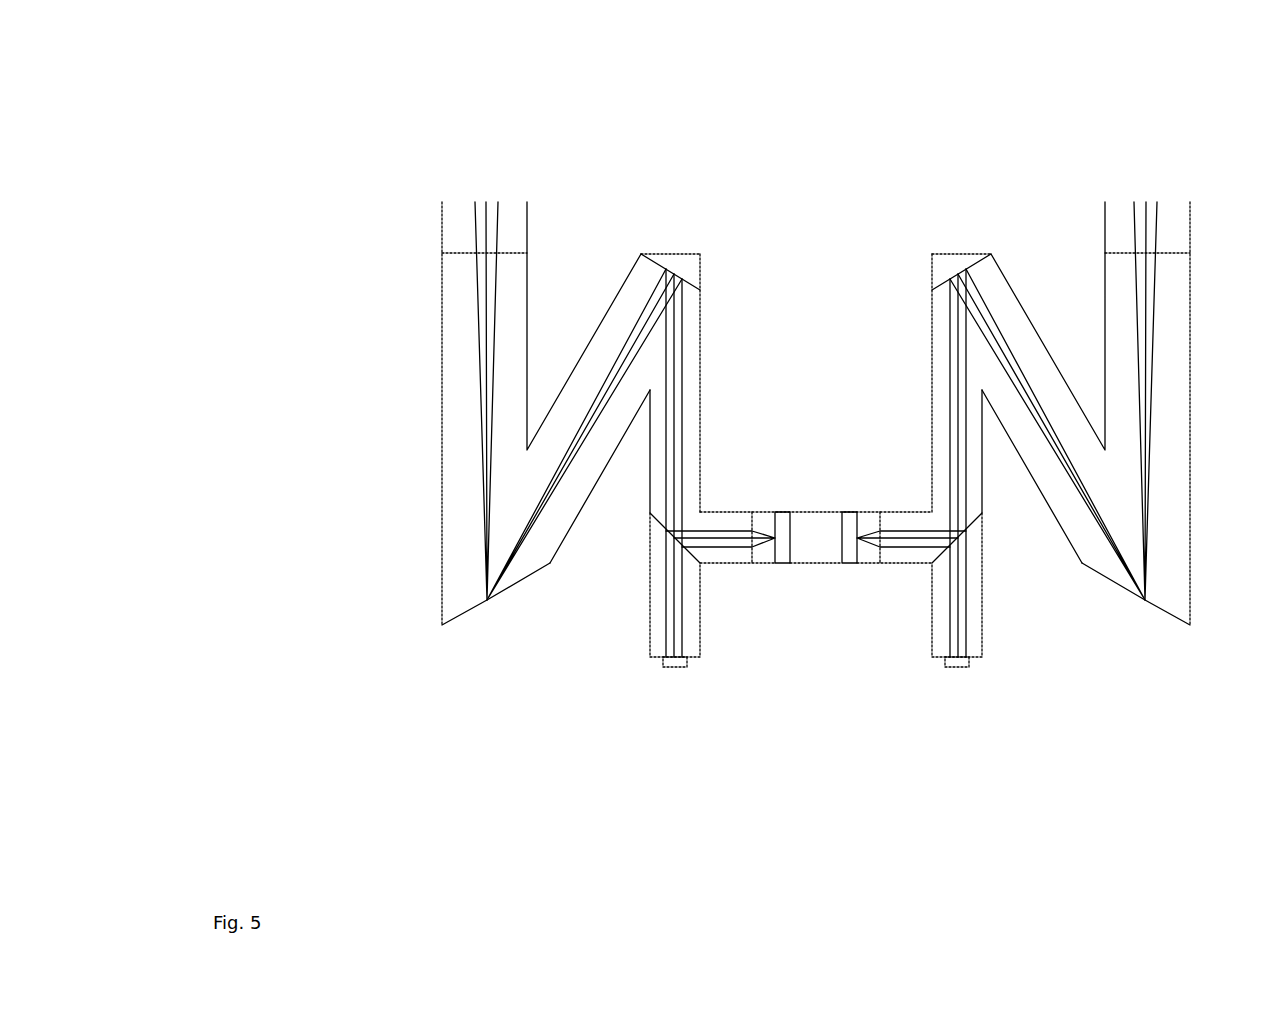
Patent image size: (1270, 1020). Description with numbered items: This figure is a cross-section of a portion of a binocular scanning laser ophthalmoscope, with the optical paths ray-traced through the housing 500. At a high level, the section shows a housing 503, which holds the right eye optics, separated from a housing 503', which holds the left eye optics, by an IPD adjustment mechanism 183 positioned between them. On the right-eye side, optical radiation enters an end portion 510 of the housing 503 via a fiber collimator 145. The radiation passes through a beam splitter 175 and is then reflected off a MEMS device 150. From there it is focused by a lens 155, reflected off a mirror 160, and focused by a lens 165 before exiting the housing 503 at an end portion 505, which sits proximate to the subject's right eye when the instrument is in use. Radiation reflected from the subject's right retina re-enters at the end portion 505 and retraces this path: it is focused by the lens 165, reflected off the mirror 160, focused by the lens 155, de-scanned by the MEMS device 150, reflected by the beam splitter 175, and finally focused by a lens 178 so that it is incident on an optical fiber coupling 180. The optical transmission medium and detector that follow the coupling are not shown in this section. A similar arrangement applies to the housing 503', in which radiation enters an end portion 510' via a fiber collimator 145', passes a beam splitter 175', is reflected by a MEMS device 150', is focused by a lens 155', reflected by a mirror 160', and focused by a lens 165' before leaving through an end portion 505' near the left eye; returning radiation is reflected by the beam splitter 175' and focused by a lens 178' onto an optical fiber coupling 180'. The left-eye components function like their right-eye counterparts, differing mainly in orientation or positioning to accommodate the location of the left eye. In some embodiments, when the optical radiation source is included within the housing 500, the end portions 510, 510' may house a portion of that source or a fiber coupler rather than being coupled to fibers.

The housing 500 is at (246, 58).
The housing 503 is at (410, 413).
The housing 503' is at (1225, 413).
The end portion 505 is at (466, 374).
The end portion 505' is at (1162, 374).
The end portion 510 is at (697, 492).
The end portion 510' is at (940, 492).
The fiber collimator 145 is at (662, 680).
The fiber collimator 145' is at (974, 680).
The MEMS device 150 is at (691, 271).
The MEMS device 150' is at (937, 271).
The lens 155 is at (588, 382).
The lens 155' is at (1043, 382).
The mirror 160 is at (496, 597).
The mirror 160' is at (1136, 597).
The lens 165 is at (451, 251).
The lens 165' is at (1183, 251).
The beam splitter 175 is at (647, 476).
The beam splitter 175' is at (987, 476).
The lens 178 is at (720, 515).
The lens 178' is at (911, 515).
The optical fiber coupling 180 is at (780, 563).
The optical fiber coupling 180' is at (848, 563).
The IPD adjustment mechanism 183 is at (816, 547).